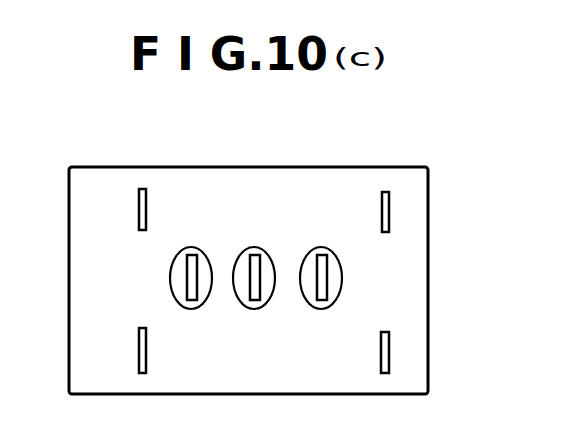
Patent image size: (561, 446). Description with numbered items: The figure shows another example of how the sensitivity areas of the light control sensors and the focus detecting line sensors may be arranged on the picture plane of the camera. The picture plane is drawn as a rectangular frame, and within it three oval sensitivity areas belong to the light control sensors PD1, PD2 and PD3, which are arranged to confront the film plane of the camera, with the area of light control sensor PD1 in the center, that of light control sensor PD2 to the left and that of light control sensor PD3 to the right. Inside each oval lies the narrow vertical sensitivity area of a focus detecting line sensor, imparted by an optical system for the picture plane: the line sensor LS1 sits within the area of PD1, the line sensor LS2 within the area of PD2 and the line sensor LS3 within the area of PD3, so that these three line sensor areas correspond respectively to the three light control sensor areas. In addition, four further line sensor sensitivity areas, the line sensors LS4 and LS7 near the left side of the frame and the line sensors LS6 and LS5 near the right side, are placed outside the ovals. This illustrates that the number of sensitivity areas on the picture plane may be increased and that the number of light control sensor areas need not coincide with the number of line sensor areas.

The focus detecting line sensor LS1 is at (261, 272).
The focus detecting line sensor LS2 is at (198, 272).
The focus detecting line sensor LS3 is at (328, 272).
The line sensor LS4 is at (137, 197).
The line sensor LS5 is at (392, 350).
The line sensor LS6 is at (390, 210).
The line sensor LS7 is at (137, 350).
The light control sensor PD1 is at (250, 310).
The light control sensor PD2 is at (185, 310).
The light control sensor PD3 is at (316, 310).